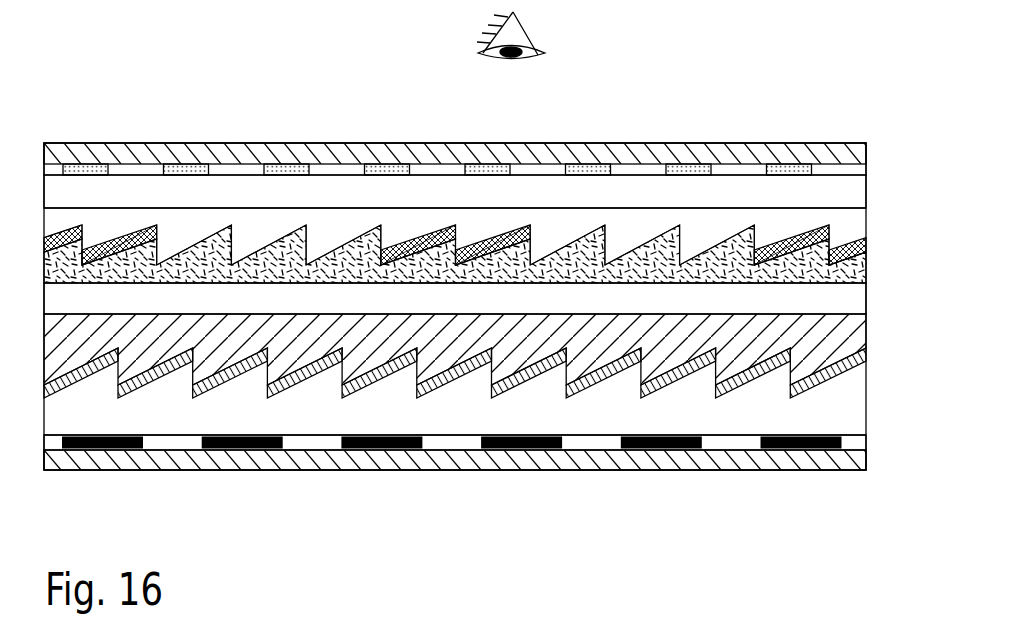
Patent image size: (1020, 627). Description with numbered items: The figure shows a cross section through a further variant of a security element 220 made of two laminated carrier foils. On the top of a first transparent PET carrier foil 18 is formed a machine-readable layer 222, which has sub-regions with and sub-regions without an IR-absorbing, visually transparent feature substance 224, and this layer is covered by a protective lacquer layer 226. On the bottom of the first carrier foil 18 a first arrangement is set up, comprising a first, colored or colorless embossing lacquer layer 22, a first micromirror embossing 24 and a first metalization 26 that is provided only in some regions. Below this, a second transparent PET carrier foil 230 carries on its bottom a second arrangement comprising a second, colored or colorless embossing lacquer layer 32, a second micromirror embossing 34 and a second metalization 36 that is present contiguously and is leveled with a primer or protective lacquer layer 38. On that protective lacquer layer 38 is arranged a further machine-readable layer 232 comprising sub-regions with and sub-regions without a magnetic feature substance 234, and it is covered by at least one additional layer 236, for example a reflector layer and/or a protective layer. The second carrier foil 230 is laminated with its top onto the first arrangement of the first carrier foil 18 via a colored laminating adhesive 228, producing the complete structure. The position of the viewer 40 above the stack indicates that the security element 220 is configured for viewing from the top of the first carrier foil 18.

The security element 220 is at (98, 52).
The viewer 40 is at (522, 23).
The colored laminating adhesive 228 is at (61, 241).
The first metalization 26 is at (112, 247).
The first micromirror embossing 24 is at (188, 258).
The protective lacquer layer 226 is at (712, 153).
The IR-absorbing, visually transparent feature substance 224 is at (790, 163).
The machine-readable layer 222 is at (855, 170).
The first transparent PET carrier foil 18 is at (855, 193).
The first embossing lacquer layer 22 is at (855, 227).
The second transparent PET carrier foil 230 is at (855, 299).
The second embossing lacquer layer 32 is at (855, 337).
The primer or protective lacquer layer 38 is at (855, 393).
The second metalization 36 is at (162, 378).
The second micromirror embossing 34 is at (240, 377).
The machine-readable layer 232 is at (855, 443).
The magnetic feature substance 234 is at (800, 450).
The additional layer 236 is at (672, 458).